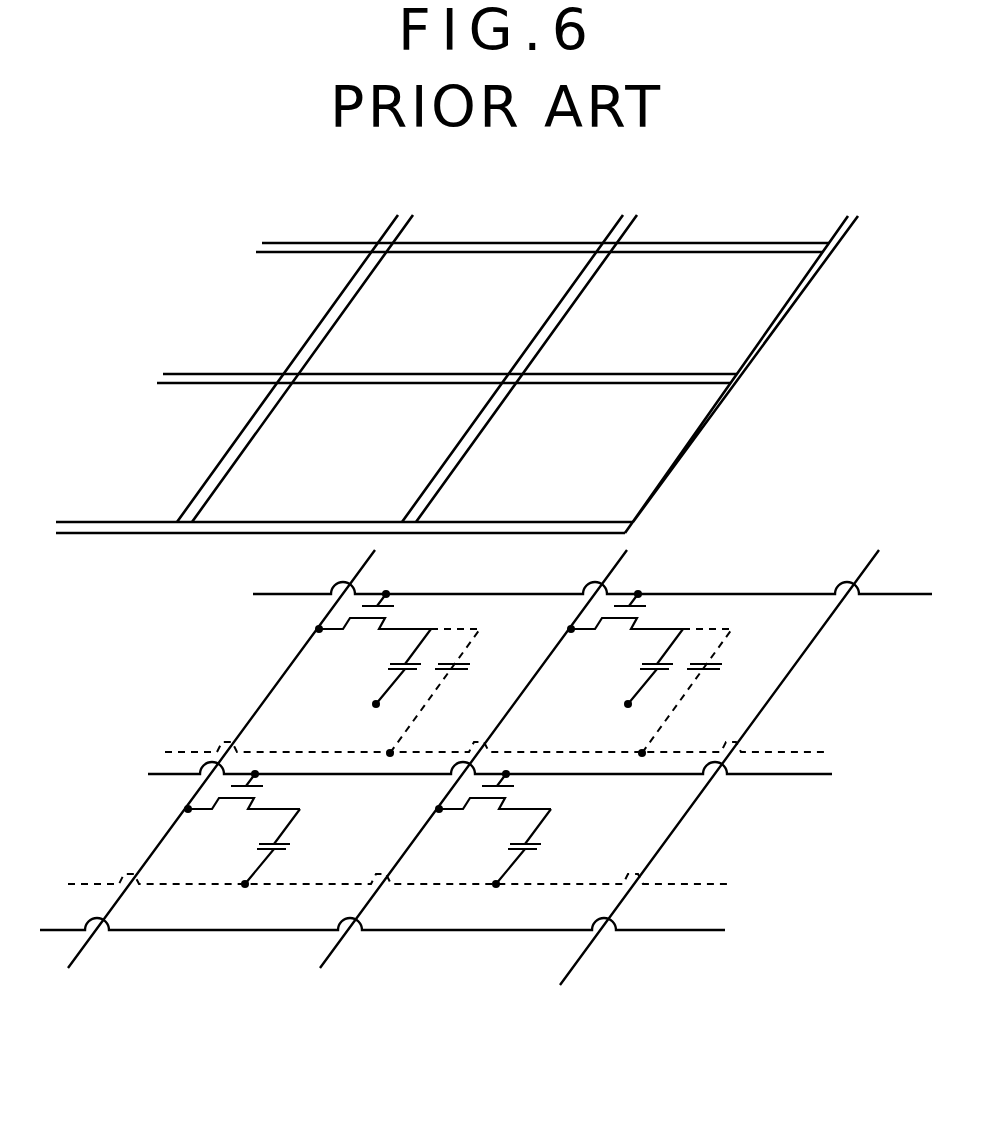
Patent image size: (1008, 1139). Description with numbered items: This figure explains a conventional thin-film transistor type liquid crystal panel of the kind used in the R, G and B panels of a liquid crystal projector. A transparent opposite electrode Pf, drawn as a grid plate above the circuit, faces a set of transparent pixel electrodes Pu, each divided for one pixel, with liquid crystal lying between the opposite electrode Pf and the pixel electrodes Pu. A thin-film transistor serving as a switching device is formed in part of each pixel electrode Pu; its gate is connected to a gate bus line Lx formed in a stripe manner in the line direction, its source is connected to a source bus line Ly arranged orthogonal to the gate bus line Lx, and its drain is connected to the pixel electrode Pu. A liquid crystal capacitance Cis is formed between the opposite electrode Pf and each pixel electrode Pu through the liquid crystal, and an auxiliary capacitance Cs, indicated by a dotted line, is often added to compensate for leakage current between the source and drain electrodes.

The opposite electrode Pf is at (638, 452).
The gate bus line Lx is at (267, 594).
The source bus line Ly is at (90, 942).
The pixel electrode Pu is at (787, 632).
The liquid crystal capacitance Cis is at (390, 664).
The auxiliary capacitance Cs is at (443, 671).